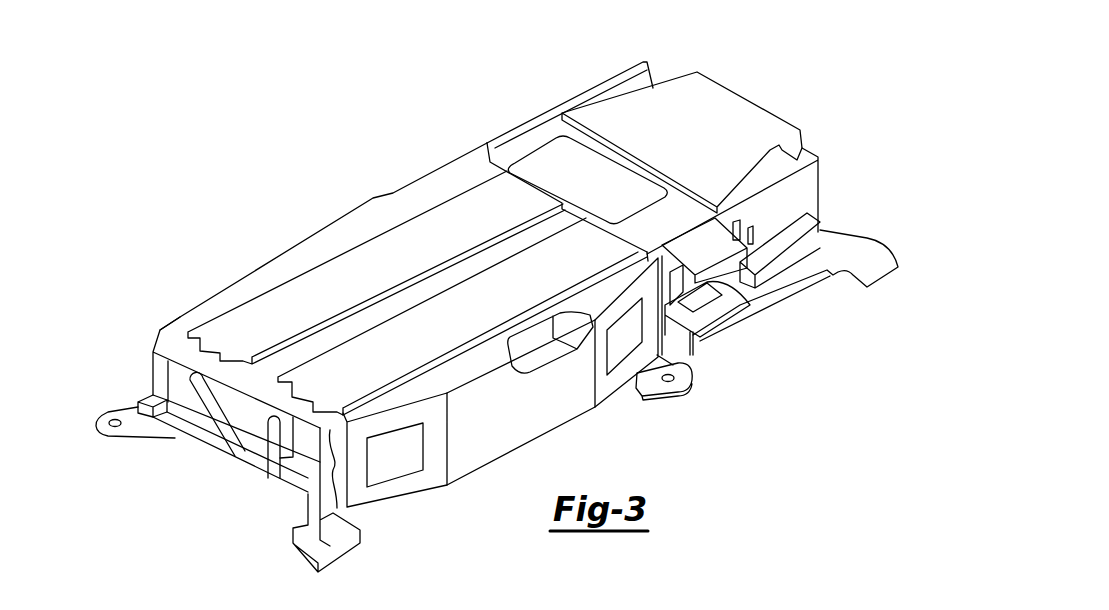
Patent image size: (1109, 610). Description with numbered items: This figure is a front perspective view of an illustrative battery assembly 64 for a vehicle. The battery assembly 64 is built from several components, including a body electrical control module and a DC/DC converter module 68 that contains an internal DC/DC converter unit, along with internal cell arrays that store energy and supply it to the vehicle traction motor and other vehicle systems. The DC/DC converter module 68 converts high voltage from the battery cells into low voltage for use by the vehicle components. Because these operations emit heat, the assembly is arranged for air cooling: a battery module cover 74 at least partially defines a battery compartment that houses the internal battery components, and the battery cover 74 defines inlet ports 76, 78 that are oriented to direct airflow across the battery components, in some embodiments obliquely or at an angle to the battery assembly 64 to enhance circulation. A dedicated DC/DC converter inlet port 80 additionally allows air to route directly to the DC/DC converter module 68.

The battery assembly 64 is at (553, 78).
The DC/DC converter module 68 is at (708, 95).
The battery module cover 74 is at (408, 203).
The inlet port 76 is at (400, 478).
The inlet port 78 is at (617, 367).
The DC/DC converter inlet port 80 is at (773, 267).